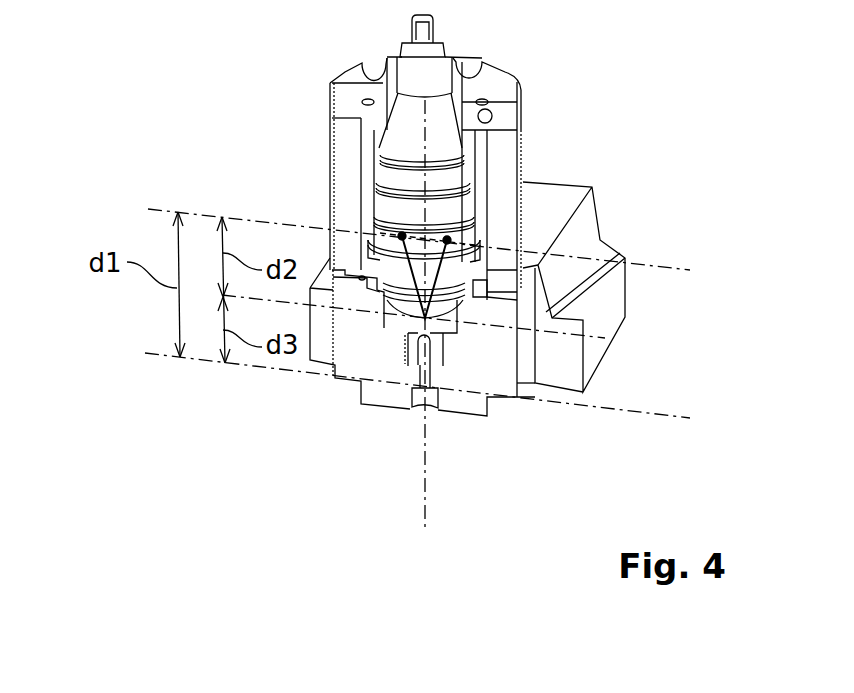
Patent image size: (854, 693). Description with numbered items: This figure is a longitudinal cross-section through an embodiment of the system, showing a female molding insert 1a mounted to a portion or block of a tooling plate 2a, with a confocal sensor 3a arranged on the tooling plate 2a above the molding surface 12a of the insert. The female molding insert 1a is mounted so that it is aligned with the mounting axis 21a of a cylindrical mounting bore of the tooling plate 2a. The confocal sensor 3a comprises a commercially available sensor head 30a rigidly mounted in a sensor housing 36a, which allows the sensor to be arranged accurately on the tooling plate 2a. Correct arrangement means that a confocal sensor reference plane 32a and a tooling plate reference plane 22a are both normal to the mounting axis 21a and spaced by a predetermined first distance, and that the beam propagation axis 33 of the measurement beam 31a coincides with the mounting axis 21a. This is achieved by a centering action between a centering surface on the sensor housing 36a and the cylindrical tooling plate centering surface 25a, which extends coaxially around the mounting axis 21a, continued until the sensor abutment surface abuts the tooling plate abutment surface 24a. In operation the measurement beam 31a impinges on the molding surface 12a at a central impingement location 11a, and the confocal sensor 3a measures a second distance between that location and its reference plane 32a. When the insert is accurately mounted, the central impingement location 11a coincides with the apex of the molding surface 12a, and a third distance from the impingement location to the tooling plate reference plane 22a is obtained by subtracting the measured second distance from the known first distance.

The female molding insert 1a is at (409, 381).
The tooling plate 2a is at (605, 321).
The confocal sensor 3a is at (560, 150).
The central impingement location 11a is at (424, 318).
The molding surface 12a is at (427, 317).
The mounting axis 21a is at (422, 517).
The tooling plate reference plane 22a is at (622, 413).
The tooling plate abutment surface 24a is at (476, 302).
The tooling plate centering surface 25a is at (484, 297).
The sensor head 30a is at (378, 142).
The measurement beam 31a is at (372, 258).
The confocal sensor reference plane 32a is at (667, 267).
The beam propagation axis 33 is at (430, 120).
The sensor housing 36a is at (343, 153).